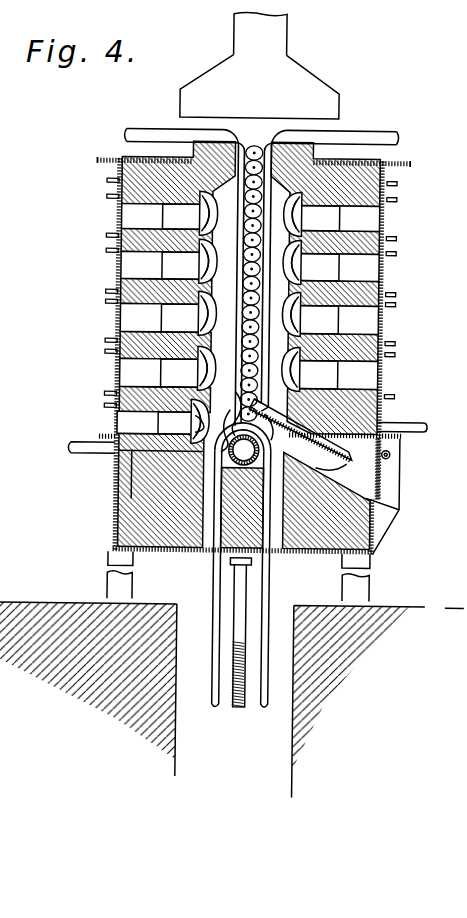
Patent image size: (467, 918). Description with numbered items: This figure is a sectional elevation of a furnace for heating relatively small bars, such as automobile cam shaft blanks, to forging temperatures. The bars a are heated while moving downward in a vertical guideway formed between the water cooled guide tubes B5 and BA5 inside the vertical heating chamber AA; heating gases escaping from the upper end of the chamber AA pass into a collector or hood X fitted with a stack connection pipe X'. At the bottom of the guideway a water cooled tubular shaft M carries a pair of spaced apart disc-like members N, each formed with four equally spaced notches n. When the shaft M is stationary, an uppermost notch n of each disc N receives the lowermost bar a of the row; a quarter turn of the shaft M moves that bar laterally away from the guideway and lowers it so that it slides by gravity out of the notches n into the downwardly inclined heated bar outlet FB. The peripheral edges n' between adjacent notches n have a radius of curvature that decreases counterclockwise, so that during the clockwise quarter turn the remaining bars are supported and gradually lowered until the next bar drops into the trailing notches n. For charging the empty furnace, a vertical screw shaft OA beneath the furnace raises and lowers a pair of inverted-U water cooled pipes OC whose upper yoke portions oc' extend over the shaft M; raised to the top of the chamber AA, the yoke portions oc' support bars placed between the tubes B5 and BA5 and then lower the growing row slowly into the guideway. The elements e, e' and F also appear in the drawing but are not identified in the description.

The stack connection pipe X' is at (287, 34).
The collector hood X is at (263, 86).
The water cooled guide tube B5 is at (189, 135).
The water cooled guide tube BA5 is at (323, 139).
The vertical heating chamber AA is at (383, 233).
The electromagnet coil e is at (248, 319).
The pole piece e' is at (246, 317).
The water cooled tubular shaft M is at (243, 444).
The bar a is at (261, 401).
The disc-like member N is at (290, 441).
The yoke portion oc' is at (225, 397).
The peripheral edge n' is at (250, 420).
The notch n is at (256, 442).
The pipe F is at (392, 465).
The heated bar outlet FB is at (383, 482).
The water cooled pipe OC is at (268, 648).
The vertical screw shaft OA is at (250, 686).